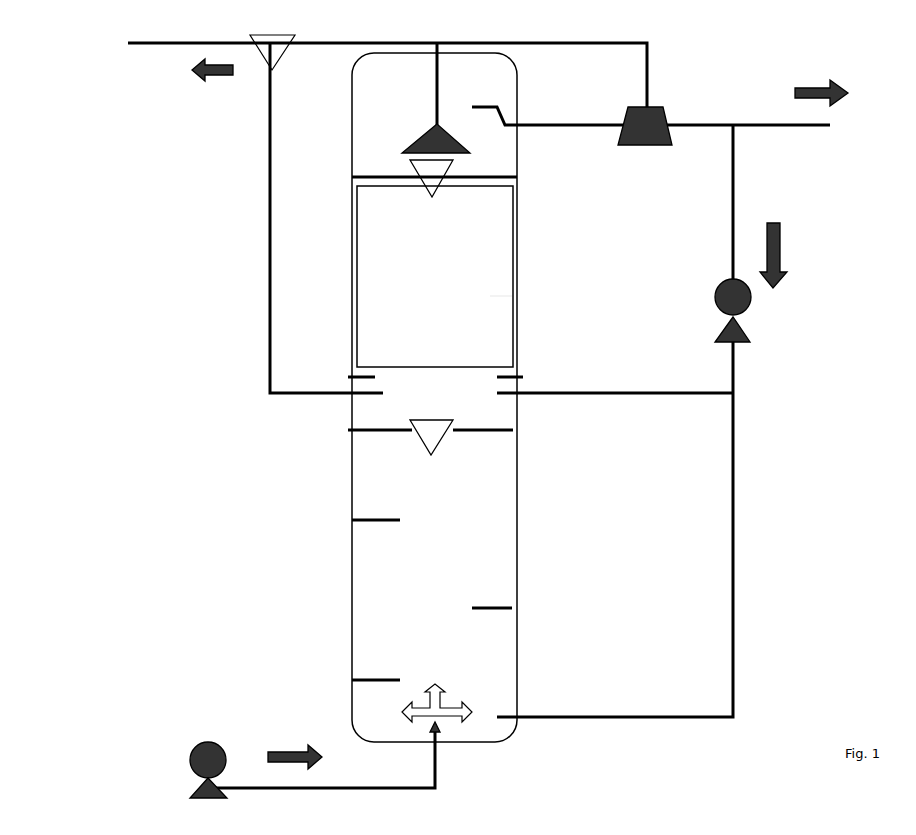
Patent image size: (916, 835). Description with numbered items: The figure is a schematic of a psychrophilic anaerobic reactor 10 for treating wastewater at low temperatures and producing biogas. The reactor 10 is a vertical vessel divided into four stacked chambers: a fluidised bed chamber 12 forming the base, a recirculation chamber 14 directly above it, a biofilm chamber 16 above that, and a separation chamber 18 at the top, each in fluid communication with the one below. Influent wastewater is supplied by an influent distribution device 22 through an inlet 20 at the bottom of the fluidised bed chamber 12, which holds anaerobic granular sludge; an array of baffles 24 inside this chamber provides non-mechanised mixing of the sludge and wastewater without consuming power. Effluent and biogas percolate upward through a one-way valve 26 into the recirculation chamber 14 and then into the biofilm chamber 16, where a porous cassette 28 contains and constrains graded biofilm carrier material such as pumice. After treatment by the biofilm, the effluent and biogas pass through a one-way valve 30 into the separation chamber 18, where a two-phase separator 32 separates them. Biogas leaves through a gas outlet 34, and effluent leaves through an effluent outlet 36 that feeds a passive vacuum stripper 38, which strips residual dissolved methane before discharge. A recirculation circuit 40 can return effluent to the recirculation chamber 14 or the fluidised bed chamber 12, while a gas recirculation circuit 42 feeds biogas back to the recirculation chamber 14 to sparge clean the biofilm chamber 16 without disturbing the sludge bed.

The anaerobic reactor 10 is at (148, 437).
The fluidised bed chamber 12 is at (350, 628).
The recirculation chamber 14 is at (520, 412).
The biofilm chamber 16 is at (350, 293).
The separation chamber 18 is at (350, 125).
The inlet 20 is at (440, 740).
The influent distribution device 22 is at (197, 750).
The baffles 24 is at (370, 520).
The one-way valve 26 is at (430, 437).
The cassette 28 is at (490, 296).
The one-way valve 30 is at (430, 173).
The two-phase separator 32 is at (440, 143).
The gas outlet 34 is at (433, 73).
The effluent outlet 36 is at (492, 105).
The passive vacuum stripper 38 is at (650, 125).
The recirculation circuit 40 is at (738, 405).
The gas recirculation circuit 42 is at (268, 223).